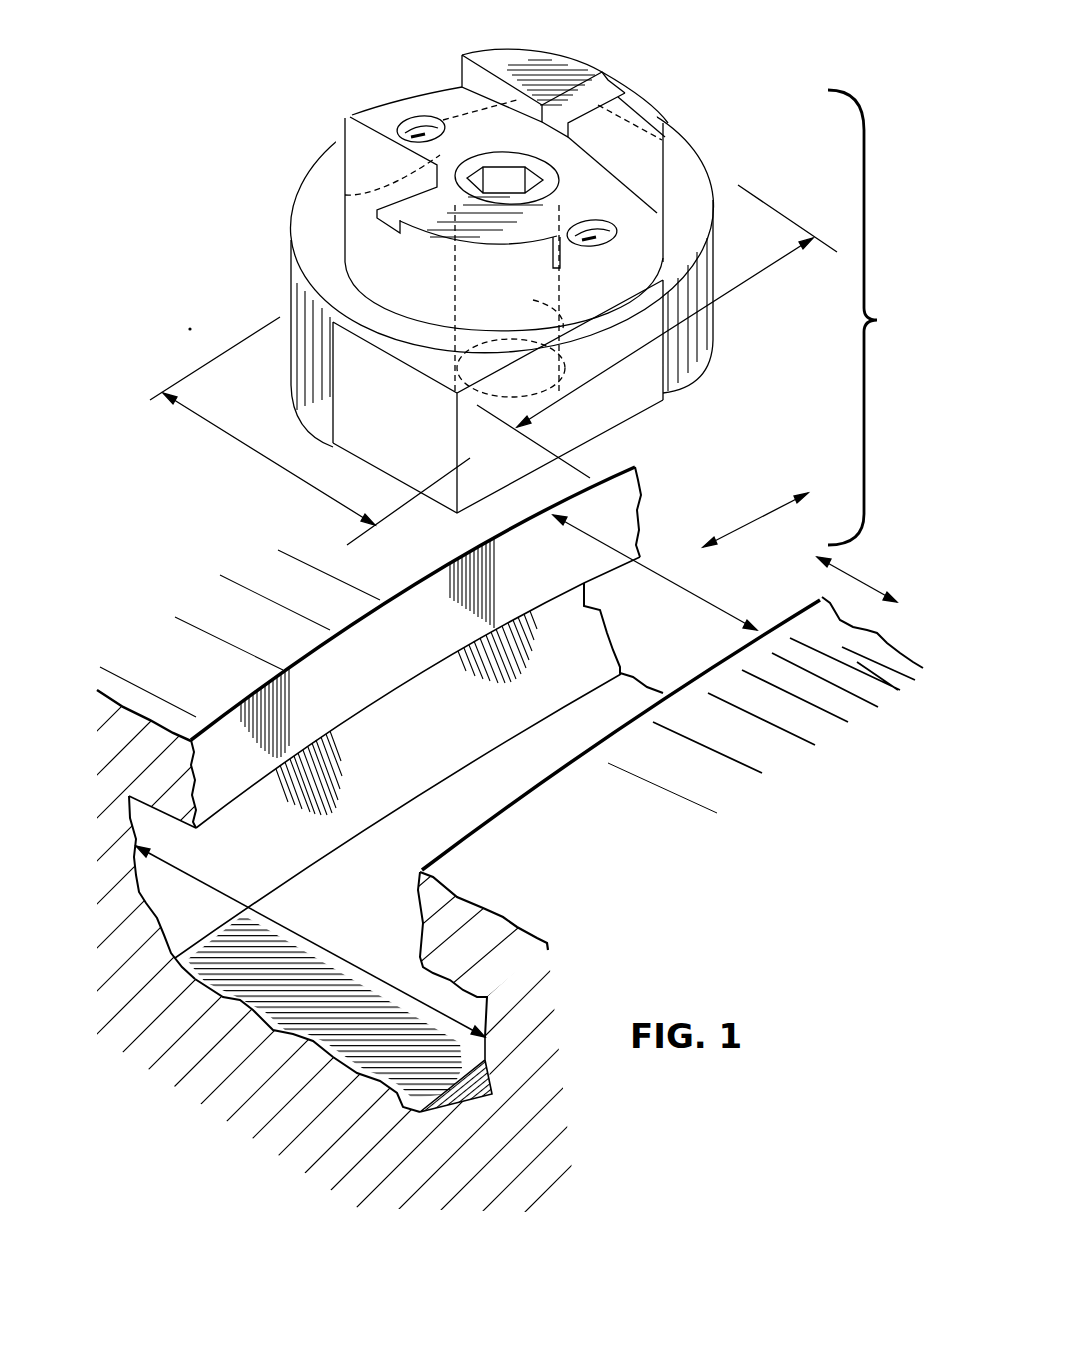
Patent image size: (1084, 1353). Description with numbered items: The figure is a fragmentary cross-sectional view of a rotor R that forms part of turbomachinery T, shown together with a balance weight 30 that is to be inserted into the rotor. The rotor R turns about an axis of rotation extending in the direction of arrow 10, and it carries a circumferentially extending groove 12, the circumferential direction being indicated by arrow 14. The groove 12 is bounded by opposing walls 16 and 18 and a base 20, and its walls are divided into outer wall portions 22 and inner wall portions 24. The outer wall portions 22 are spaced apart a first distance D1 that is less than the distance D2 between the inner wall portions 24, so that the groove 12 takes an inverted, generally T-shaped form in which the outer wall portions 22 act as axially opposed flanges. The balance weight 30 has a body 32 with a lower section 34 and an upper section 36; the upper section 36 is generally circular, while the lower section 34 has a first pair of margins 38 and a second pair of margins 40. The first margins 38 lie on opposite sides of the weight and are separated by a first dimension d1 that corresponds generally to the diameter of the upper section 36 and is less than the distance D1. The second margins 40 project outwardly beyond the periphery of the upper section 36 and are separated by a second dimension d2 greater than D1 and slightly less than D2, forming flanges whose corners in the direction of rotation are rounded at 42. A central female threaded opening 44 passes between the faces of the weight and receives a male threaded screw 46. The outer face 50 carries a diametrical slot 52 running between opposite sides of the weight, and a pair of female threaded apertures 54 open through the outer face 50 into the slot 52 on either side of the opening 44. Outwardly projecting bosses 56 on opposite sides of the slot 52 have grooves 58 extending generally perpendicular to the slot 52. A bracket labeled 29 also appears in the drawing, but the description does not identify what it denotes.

The arrow 10 is at (862, 572).
The groove 12 is at (668, 557).
The arrow 14 is at (745, 520).
The opposing wall 16 is at (146, 871).
The opposing wall 18 is at (457, 1040).
The base 20 is at (380, 916).
The outer wall portions 22 is at (368, 664).
The inner wall portions 24 is at (325, 749).
The overall height of insert assembly 29 is at (871, 317).
The balance weight 30 is at (312, 197).
The balance weight body 32 is at (314, 285).
The lower section 34 is at (300, 343).
The upper section 36 is at (340, 157).
The first margins 38 is at (588, 334).
The second margins 40 is at (370, 440).
The rounded corners 42 is at (290, 252).
The central female threaded opening 44 is at (548, 170).
The male threaded screw 46 is at (471, 167).
The outer face 50 is at (553, 62).
The diametrical slot 52 is at (450, 103).
The female threaded apertures 54 is at (408, 123).
The bosses 56 is at (637, 107).
The grooves 58 is at (600, 90).
The insert base dimension d1 is at (270, 462).
The insert flange diameter d2 is at (748, 283).
The first distance D1 is at (727, 602).
The distance D2 is at (343, 949).
The turbomachinery T is at (167, 573).
The rotor R is at (685, 845).